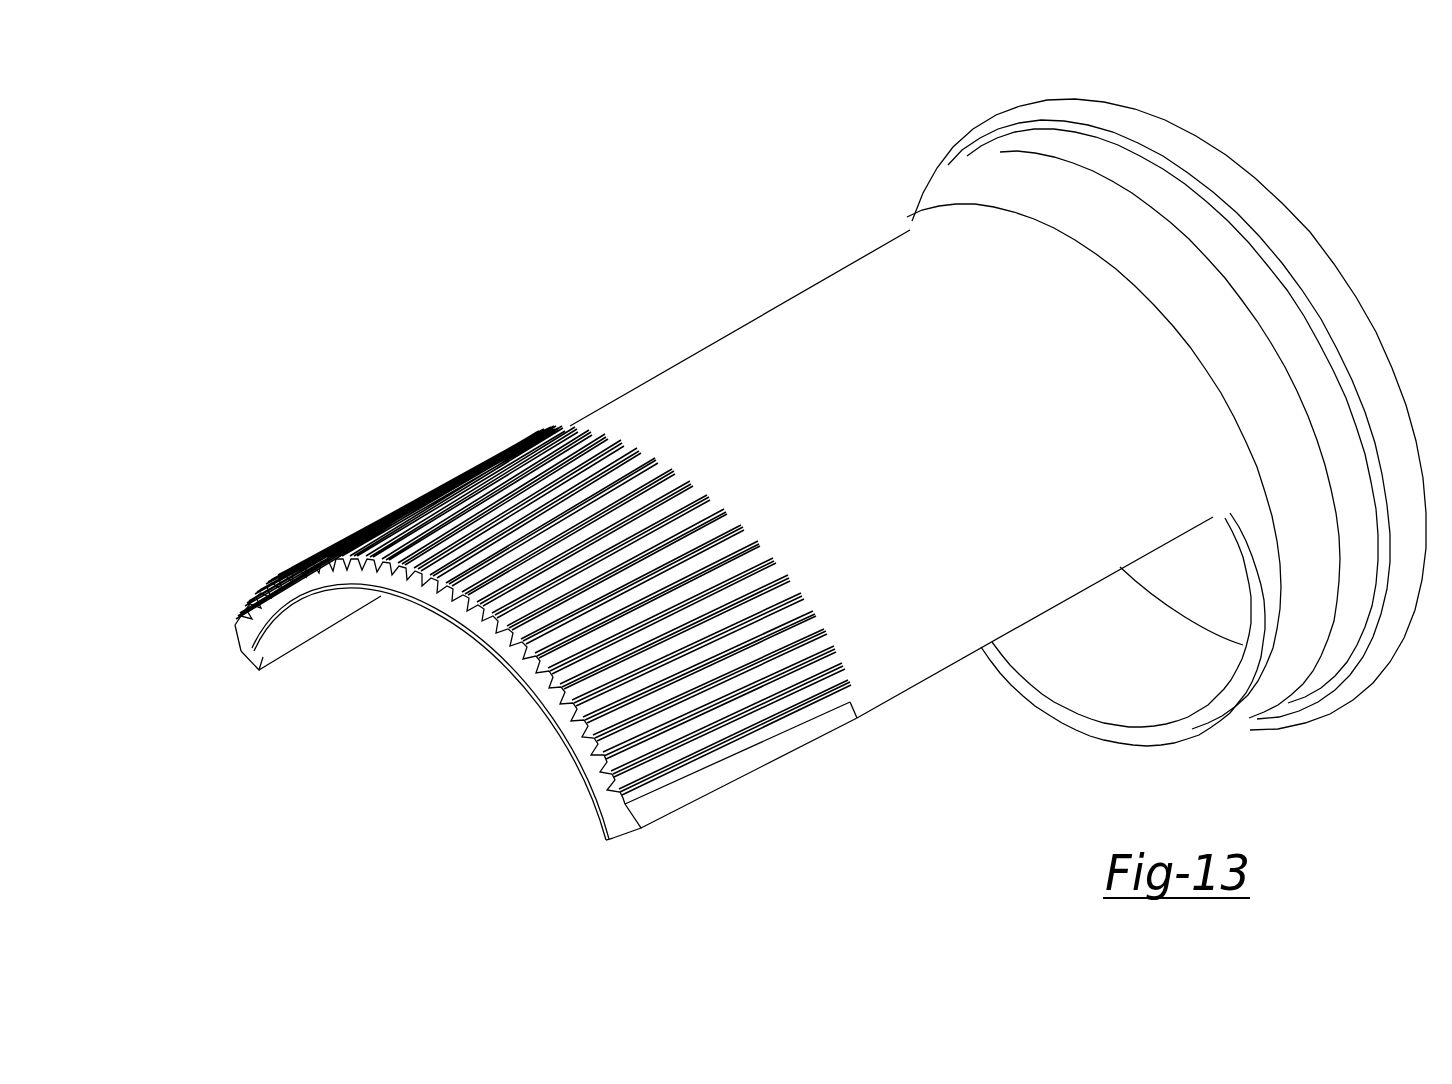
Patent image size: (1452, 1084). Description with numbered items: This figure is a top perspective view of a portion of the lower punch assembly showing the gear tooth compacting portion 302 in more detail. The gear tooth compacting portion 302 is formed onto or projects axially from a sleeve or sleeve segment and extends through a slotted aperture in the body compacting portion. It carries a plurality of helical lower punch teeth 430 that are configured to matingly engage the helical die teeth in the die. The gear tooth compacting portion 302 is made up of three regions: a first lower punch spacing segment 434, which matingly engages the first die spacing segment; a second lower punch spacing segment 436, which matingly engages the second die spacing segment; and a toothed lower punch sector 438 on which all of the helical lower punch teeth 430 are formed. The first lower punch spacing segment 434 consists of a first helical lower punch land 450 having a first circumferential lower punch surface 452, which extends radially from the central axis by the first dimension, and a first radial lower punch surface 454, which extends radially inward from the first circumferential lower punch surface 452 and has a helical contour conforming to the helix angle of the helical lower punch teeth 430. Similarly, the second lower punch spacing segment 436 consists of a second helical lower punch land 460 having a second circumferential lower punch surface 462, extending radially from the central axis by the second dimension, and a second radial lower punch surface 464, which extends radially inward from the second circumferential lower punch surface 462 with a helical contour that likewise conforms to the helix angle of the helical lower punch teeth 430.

The gear tooth compacting portion 302 is at (768, 312).
The helical lower punch teeth 430 is at (727, 510).
The first lower punch spacing segment 434 is at (735, 797).
The second lower punch spacing segment 436 is at (507, 652).
The toothed lower punch sector 438 is at (426, 487).
The first helical lower punch land 450 is at (612, 827).
The first circumferential lower punch surface 452 is at (653, 807).
The first radial lower punch surface 454 is at (643, 827).
The second helical lower punch land 460 is at (260, 642).
The second circumferential lower punch surface 462 is at (243, 647).
The second radial lower punch surface 464 is at (248, 660).